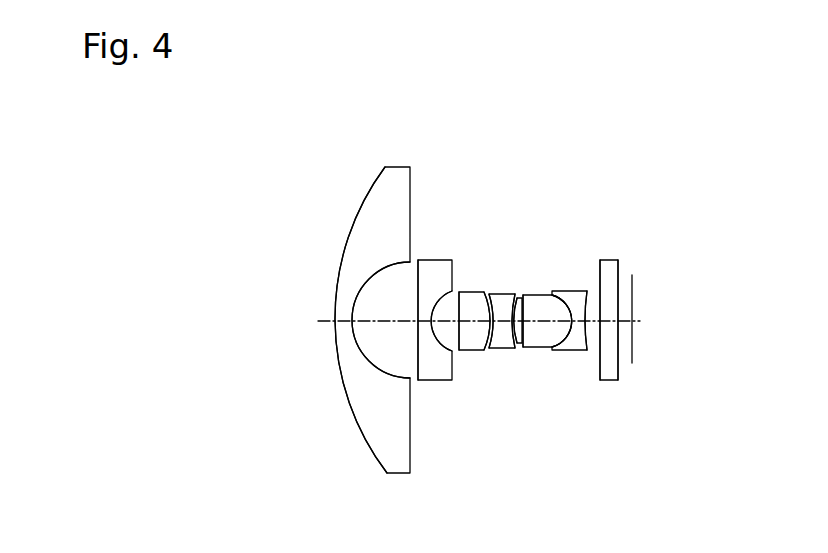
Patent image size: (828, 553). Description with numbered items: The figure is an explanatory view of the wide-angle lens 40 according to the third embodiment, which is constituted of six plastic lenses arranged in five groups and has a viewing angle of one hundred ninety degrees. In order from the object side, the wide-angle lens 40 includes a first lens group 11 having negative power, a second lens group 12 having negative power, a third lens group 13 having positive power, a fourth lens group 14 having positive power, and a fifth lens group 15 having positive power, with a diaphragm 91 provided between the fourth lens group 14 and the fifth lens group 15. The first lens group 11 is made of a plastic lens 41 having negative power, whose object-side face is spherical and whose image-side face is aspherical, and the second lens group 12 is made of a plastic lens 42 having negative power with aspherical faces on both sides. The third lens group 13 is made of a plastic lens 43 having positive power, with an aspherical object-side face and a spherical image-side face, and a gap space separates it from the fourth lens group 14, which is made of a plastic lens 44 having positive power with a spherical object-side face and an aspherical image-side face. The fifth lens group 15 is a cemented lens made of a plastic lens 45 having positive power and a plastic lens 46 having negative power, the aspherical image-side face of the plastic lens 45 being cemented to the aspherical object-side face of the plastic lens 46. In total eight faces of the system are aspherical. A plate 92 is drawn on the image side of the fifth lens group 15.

The wide-angle lens 40 is at (647, 140).
The first lens group 11 is at (337, 320).
The plastic lens 41 is at (382, 197).
The second lens group 12 is at (434, 250).
The plastic lens 42 is at (435, 260).
The third lens group 13 is at (469, 253).
The plastic lens 43 is at (475, 292).
The fourth lens group 14 is at (509, 269).
The plastic lens 44 is at (500, 292).
The diaphragm 91 is at (519, 298).
The fifth lens group 15 is at (633, 186).
The plastic lens 45 is at (539, 295).
The plastic lens 46 is at (578, 291).
The cover glass / filter 92 is at (605, 260).